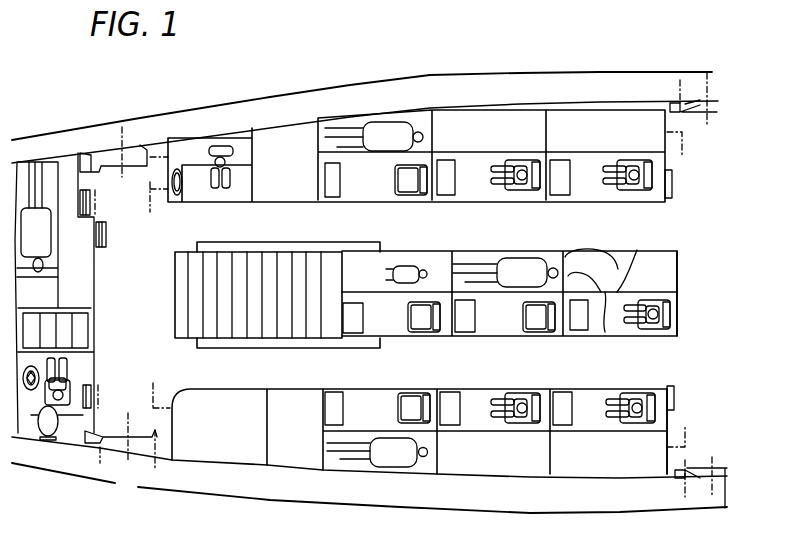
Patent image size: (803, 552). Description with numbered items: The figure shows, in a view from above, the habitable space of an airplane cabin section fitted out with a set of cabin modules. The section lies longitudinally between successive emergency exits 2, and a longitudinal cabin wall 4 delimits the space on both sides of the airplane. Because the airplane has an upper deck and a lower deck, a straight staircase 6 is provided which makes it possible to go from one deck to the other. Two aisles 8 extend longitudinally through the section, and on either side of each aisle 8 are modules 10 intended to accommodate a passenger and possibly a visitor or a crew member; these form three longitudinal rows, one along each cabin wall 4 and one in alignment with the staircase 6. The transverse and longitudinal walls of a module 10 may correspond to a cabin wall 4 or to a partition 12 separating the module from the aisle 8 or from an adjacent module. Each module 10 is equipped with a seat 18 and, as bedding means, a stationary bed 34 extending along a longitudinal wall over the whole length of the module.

The emergency exit 2 is at (148, 137).
The cabin wall 4 is at (338, 100).
The staircase 6 is at (176, 302).
The aisle 8 is at (650, 233).
The module 10 is at (565, 120).
The partition 12 is at (617, 287).
The seat 18 is at (397, 175).
The stationary bed 34 is at (527, 149).